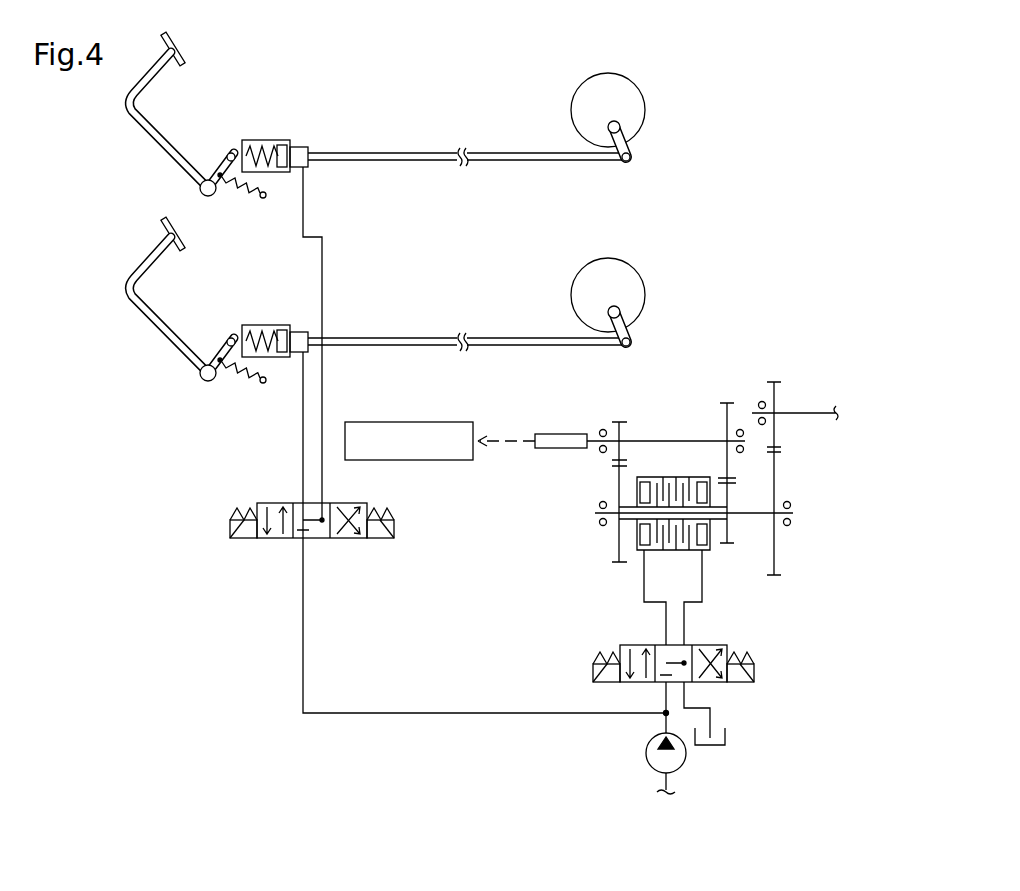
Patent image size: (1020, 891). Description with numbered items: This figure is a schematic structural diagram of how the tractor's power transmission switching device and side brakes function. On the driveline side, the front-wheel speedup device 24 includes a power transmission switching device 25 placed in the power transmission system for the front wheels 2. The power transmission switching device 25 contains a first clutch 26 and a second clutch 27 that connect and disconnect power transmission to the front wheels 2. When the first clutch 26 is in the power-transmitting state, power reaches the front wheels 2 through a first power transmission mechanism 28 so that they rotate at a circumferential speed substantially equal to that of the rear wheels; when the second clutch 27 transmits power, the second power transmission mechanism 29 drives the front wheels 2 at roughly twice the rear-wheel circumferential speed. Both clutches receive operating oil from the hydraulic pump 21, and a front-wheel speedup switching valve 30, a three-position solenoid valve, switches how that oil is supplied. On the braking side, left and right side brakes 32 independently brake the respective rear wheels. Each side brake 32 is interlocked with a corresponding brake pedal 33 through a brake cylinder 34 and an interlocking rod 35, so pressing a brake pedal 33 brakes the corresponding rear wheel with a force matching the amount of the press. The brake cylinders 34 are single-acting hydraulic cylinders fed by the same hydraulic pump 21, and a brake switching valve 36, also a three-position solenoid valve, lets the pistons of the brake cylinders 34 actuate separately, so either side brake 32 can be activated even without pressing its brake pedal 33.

The front wheels 2 is at (410, 421).
The hydraulic pump 21 is at (645, 753).
The front-wheel speedup device 24 is at (812, 560).
The power transmission switching device 25 is at (681, 437).
The first clutch 26 is at (709, 556).
The second clutch 27 is at (636, 556).
The first power transmission mechanism 28 is at (745, 477).
The second power transmission mechanism 29 is at (606, 483).
The front-wheel speedup switching valve 30 is at (716, 684).
The side brakes 32 is at (650, 111).
The brake pedals 33 is at (186, 48).
The brake cylinders 34 is at (270, 140).
The interlocking rods 35 is at (428, 152).
The brake switching valve 36 is at (276, 540).